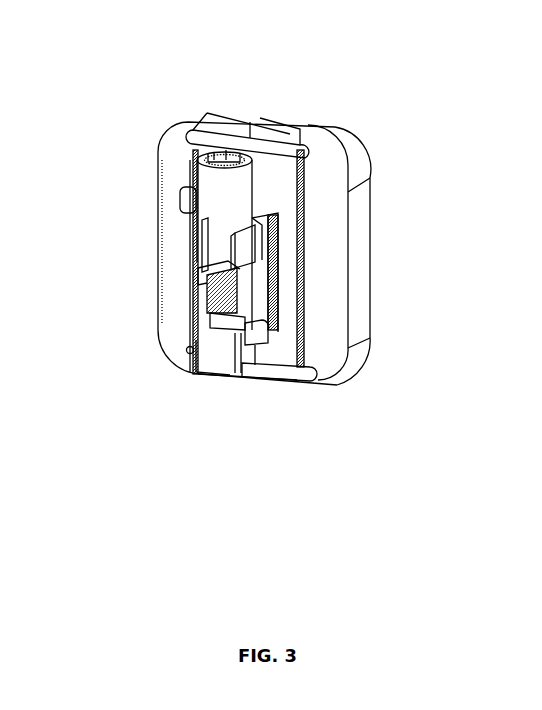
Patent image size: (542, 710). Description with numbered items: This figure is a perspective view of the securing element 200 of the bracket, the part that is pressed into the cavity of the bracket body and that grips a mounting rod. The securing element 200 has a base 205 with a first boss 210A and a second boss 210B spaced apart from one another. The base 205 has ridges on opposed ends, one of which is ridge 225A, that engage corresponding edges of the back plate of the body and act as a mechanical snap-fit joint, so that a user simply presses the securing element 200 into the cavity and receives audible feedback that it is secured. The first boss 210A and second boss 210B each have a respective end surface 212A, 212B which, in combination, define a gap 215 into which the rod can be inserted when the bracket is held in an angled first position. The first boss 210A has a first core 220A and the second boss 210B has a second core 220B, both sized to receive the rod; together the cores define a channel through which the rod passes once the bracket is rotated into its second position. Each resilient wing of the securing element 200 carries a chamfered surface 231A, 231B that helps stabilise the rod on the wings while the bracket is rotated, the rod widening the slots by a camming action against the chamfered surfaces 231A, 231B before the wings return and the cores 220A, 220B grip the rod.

The securing element 200 is at (365, 452).
The base 205 is at (335, 130).
The ridge 225A is at (265, 127).
The first boss 210A is at (192, 175).
The first core 220A is at (222, 157).
The chamfered surface 231A is at (182, 205).
The end surface 212A is at (212, 253).
The gap 215 is at (262, 299).
The end surface 212B is at (207, 273).
The chamfered surface 231B is at (267, 337).
The second core 220B is at (220, 392).
The second boss 210B is at (200, 372).